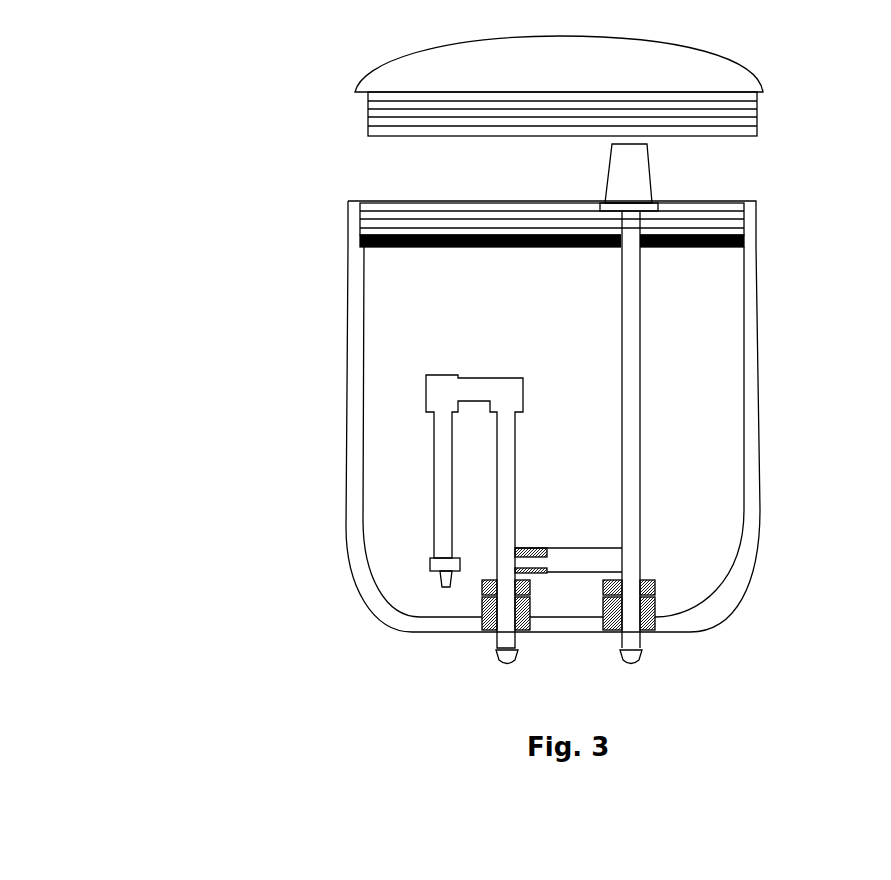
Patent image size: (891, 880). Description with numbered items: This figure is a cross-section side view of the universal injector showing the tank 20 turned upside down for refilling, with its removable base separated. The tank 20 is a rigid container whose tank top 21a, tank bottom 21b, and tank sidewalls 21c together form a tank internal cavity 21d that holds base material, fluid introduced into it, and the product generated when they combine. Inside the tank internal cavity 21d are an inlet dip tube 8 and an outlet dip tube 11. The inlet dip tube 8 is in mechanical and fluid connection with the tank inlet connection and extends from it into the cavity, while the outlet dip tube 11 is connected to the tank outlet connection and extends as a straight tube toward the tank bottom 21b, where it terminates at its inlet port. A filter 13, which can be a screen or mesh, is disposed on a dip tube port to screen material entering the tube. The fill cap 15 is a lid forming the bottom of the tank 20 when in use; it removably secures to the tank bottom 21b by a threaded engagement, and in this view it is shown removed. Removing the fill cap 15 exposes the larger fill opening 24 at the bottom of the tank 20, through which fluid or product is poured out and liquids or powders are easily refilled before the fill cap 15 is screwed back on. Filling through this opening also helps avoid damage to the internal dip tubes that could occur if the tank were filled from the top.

The fill cap 15 is at (534, 86).
The filter 13 is at (650, 177).
The fill opening 24 is at (527, 198).
The tank bottom 21b is at (380, 192).
The tank sidewalls 21c is at (763, 373).
The tank top 21a is at (685, 630).
The tank internal cavity 21d is at (470, 432).
The tank 20 is at (330, 397).
The outlet dip tube 11 is at (648, 437).
The inlet dip tube 8 is at (509, 519).